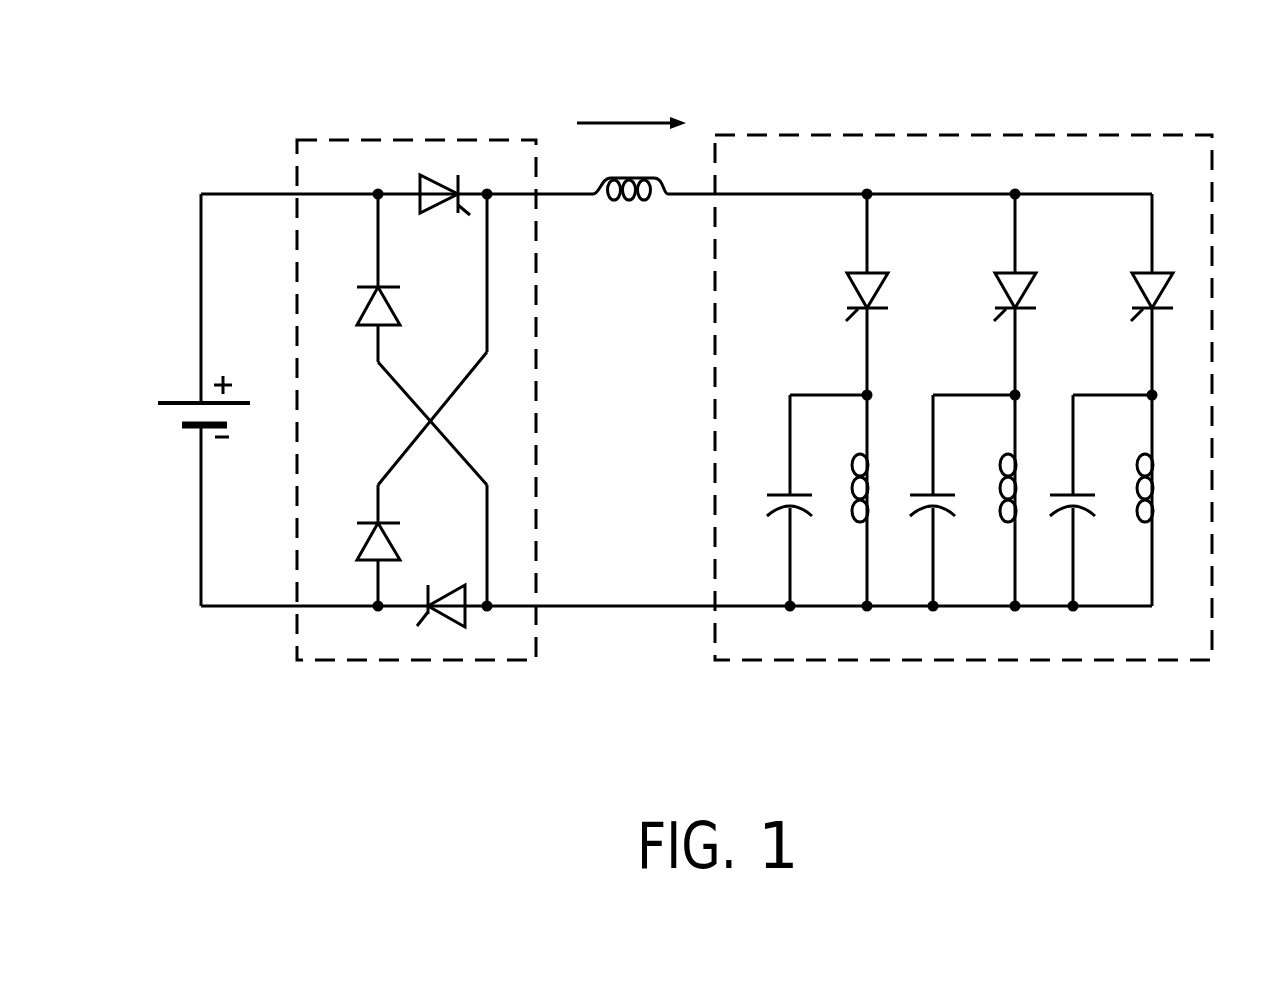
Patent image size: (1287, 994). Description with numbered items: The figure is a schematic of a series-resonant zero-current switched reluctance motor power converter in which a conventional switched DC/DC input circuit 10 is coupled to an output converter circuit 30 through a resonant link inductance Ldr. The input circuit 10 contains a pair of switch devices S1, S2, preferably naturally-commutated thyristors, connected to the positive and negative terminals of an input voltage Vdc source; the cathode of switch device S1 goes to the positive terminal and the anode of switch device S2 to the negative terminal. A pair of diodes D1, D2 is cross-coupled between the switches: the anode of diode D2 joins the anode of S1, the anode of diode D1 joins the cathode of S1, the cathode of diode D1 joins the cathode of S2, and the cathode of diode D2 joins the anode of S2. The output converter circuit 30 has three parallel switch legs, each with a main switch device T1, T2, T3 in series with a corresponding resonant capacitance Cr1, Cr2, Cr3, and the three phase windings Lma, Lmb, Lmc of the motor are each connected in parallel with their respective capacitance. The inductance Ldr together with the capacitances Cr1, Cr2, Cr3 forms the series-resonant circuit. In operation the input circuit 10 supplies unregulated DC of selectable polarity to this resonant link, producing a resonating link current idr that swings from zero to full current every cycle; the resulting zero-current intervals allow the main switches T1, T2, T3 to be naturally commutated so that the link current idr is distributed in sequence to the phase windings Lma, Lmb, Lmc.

The input circuit 10 is at (337, 140).
The output converter circuit 30 is at (1165, 135).
The switch device S1 is at (445, 178).
The switch device S2 is at (441, 588).
The diode D1 is at (359, 307).
The diode D2 is at (359, 538).
The input voltage source Vdc is at (200, 393).
The resonant link inductance Ldr is at (624, 216).
The resonating DC link current idr is at (631, 99).
The main switch device T1 is at (857, 273).
The main switch device T2 is at (1000, 273).
The main switch device T3 is at (1132, 274).
The resonant capacitance Cr1 is at (773, 500).
The resonant capacitance Cr2 is at (918, 500).
The resonant capacitance Cr3 is at (1061, 500).
The phase winding Lma is at (836, 469).
The phase winding Lmb is at (982, 470).
The phase winding Lmc is at (1120, 470).